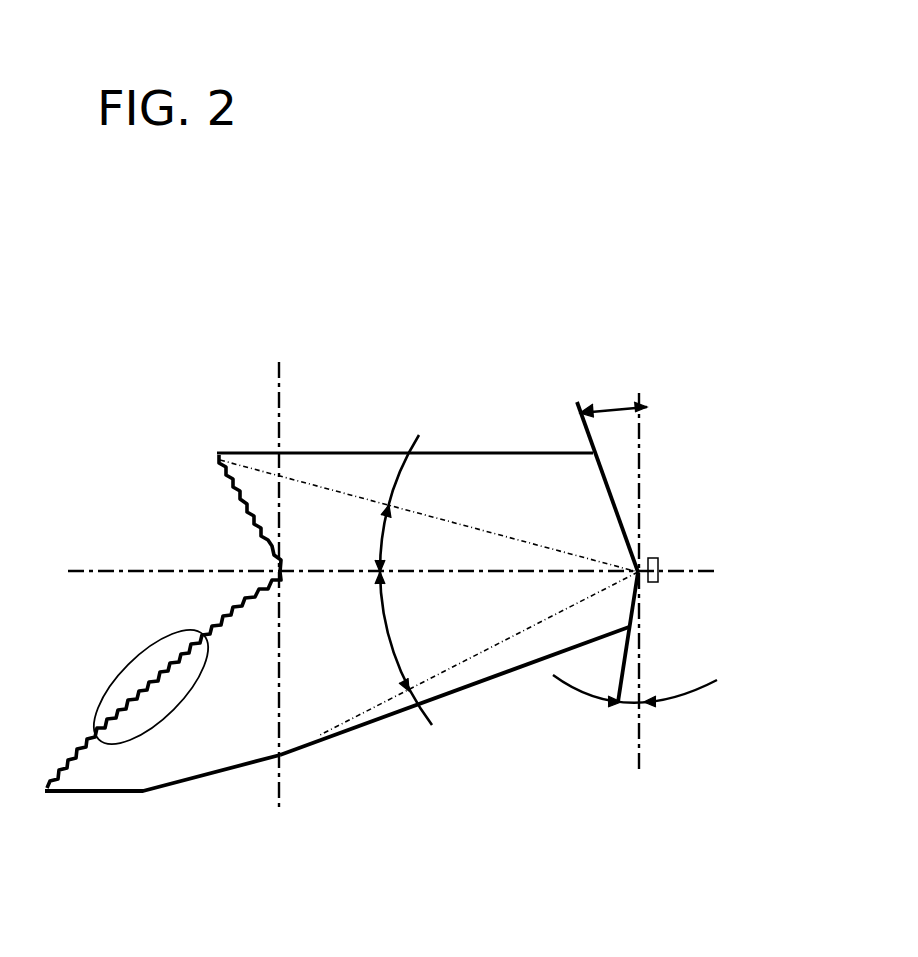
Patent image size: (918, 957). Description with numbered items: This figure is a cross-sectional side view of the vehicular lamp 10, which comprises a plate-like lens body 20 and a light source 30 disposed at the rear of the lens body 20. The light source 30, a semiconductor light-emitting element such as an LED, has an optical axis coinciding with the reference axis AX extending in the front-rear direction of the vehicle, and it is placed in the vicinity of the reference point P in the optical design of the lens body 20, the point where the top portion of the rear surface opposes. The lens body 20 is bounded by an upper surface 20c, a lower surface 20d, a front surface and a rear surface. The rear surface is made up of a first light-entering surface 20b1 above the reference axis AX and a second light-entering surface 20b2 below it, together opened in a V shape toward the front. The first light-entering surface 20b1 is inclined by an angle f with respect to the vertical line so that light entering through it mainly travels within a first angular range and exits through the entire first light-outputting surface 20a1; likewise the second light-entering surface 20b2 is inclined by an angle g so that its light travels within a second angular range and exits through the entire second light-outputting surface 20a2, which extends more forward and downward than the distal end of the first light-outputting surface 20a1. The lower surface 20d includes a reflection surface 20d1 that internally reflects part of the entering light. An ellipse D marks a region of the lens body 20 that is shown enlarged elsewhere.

The vehicular lamp 10 is at (515, 360).
The lens body 20 is at (504, 452).
The first light-outputting surface 20a1 is at (240, 507).
The second light-outputting surface 20a2 is at (233, 610).
The first light-entering surface 20b1 is at (617, 495).
The second light-entering surface 20b2 is at (641, 603).
The upper surface 20c is at (358, 452).
The lower surface 20d is at (478, 687).
The reflection surface 20d1 is at (210, 777).
The light source 30 is at (657, 562).
The reference axis AX is at (70, 569).
The ellipse D is at (130, 656).
The reference point P is at (685, 599).
The inclination angle f is at (613, 395).
The inclination angle g is at (635, 707).